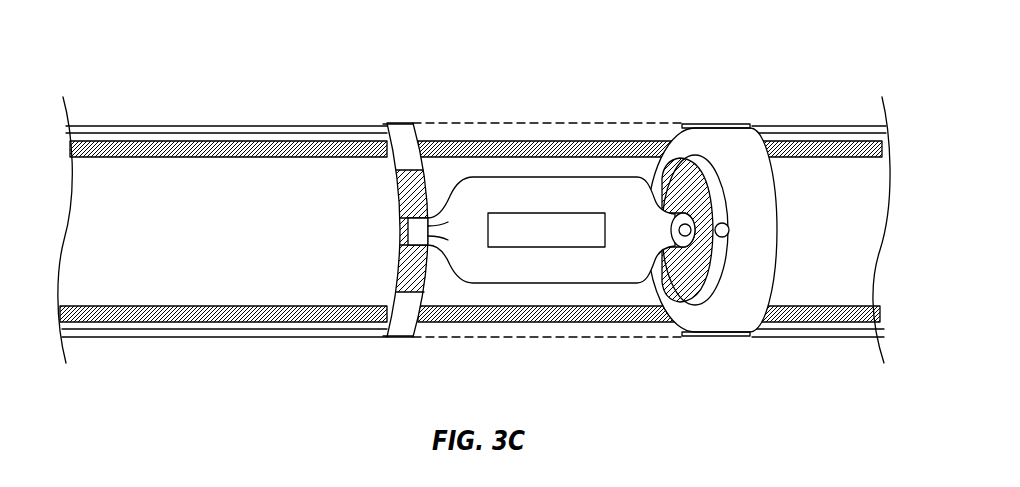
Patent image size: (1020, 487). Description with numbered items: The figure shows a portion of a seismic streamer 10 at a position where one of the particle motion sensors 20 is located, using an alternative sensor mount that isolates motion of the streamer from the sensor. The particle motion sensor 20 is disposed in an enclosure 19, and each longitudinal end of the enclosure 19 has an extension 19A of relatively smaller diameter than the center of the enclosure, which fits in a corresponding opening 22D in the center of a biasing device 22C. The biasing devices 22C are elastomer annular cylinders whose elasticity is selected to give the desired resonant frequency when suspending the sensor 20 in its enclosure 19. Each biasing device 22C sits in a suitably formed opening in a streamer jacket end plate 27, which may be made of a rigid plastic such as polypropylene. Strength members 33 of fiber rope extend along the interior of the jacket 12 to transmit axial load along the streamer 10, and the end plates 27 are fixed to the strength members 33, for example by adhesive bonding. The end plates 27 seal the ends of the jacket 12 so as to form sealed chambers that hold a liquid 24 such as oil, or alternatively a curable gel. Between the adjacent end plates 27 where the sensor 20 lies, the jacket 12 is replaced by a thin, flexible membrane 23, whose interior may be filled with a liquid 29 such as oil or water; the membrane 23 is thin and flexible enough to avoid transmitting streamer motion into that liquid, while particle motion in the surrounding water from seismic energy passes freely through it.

The streamer 10 is at (363, 68).
The jacket 12 is at (232, 126).
The strength members 33 is at (231, 158).
The liquid 24 is at (247, 243).
The end plate 27 is at (405, 127).
The membrane 23 is at (486, 123).
The biasing device 22C is at (402, 202).
The opening 22D is at (412, 257).
The enclosure 19 is at (486, 276).
The extension 19A is at (432, 234).
The particle motion sensor 20 is at (563, 230).
The liquid 29 is at (618, 298).